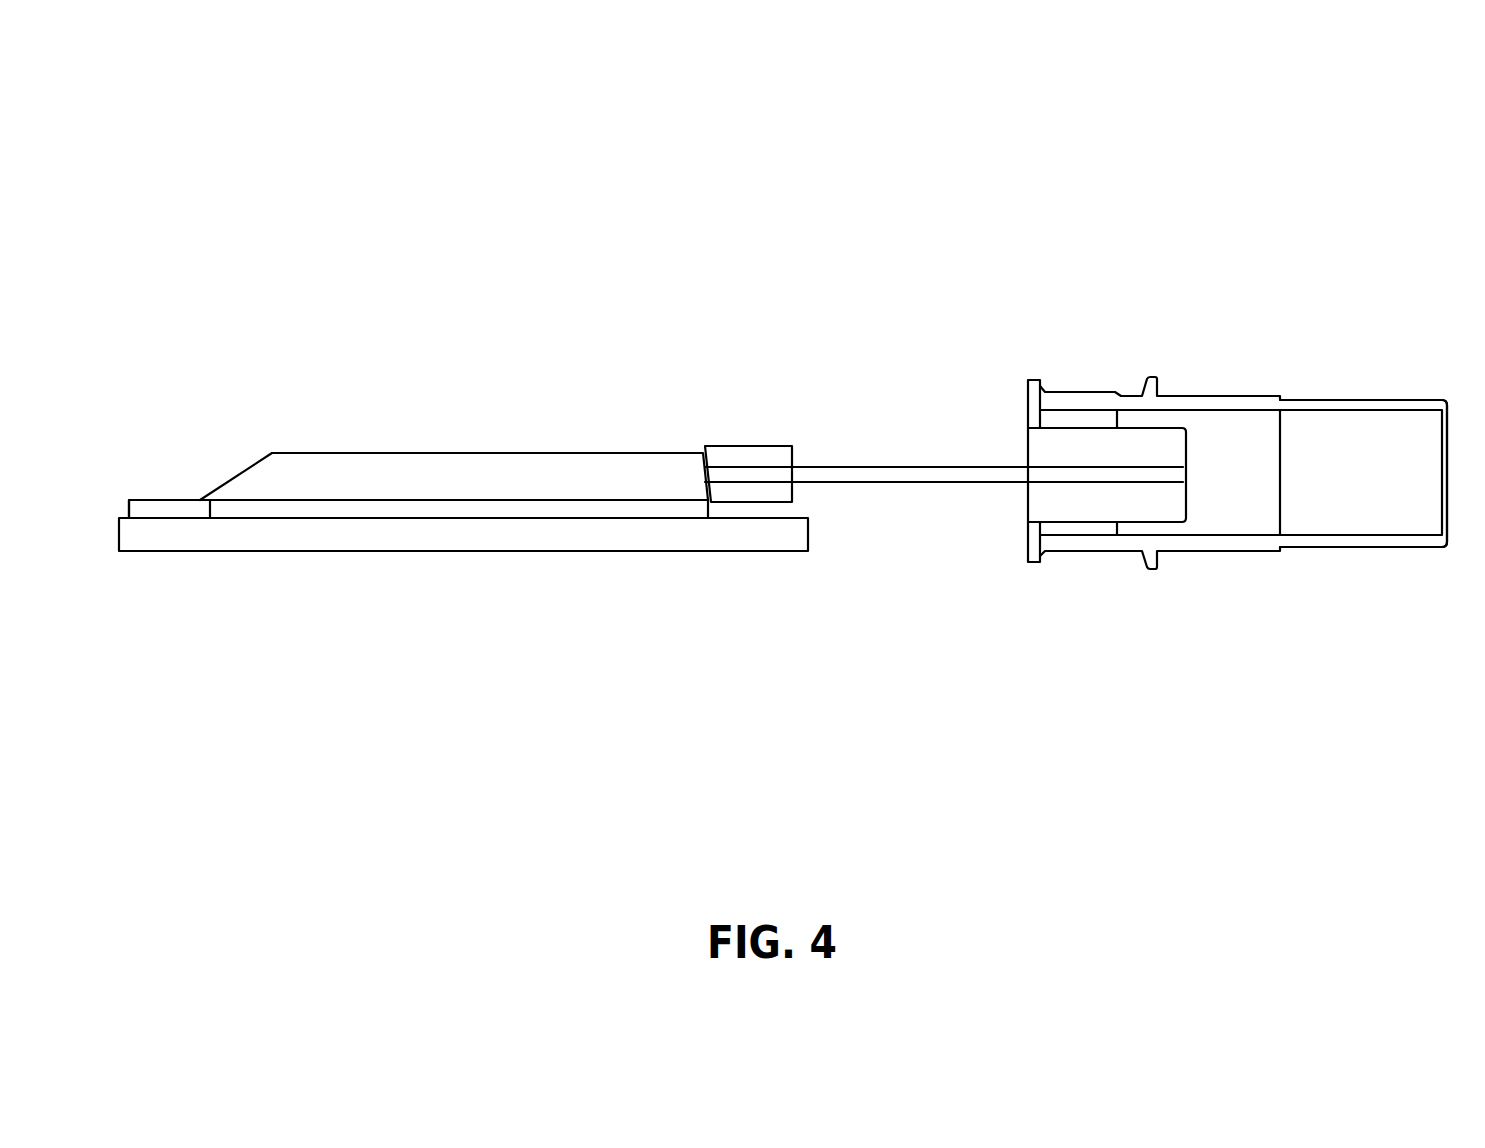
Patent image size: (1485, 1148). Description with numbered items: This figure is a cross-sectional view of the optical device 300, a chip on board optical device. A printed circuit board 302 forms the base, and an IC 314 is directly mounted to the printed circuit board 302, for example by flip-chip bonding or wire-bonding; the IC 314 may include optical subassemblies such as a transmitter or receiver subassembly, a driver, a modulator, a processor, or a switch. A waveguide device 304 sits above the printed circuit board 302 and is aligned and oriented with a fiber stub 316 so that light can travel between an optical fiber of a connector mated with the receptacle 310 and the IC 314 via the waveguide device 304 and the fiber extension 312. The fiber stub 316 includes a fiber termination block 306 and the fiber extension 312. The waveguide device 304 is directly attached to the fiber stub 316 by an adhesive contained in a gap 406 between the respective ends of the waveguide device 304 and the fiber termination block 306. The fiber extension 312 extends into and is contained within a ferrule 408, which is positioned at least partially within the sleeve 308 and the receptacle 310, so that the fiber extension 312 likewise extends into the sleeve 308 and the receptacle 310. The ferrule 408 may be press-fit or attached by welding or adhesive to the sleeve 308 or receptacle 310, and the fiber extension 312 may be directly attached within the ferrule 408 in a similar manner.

The optical device 300 is at (258, 64).
The printed circuit board 302 is at (464, 551).
The waveguide device 304 is at (530, 453).
The fiber termination block 306 is at (755, 446).
The sleeve 308 is at (1133, 397).
The receptacle 310 is at (1418, 398).
The fiber extension 312 is at (850, 467).
The IC 314 is at (172, 500).
The fiber stub 316 is at (727, 253).
The gap 406 is at (708, 508).
The ferrule 408 is at (1143, 522).